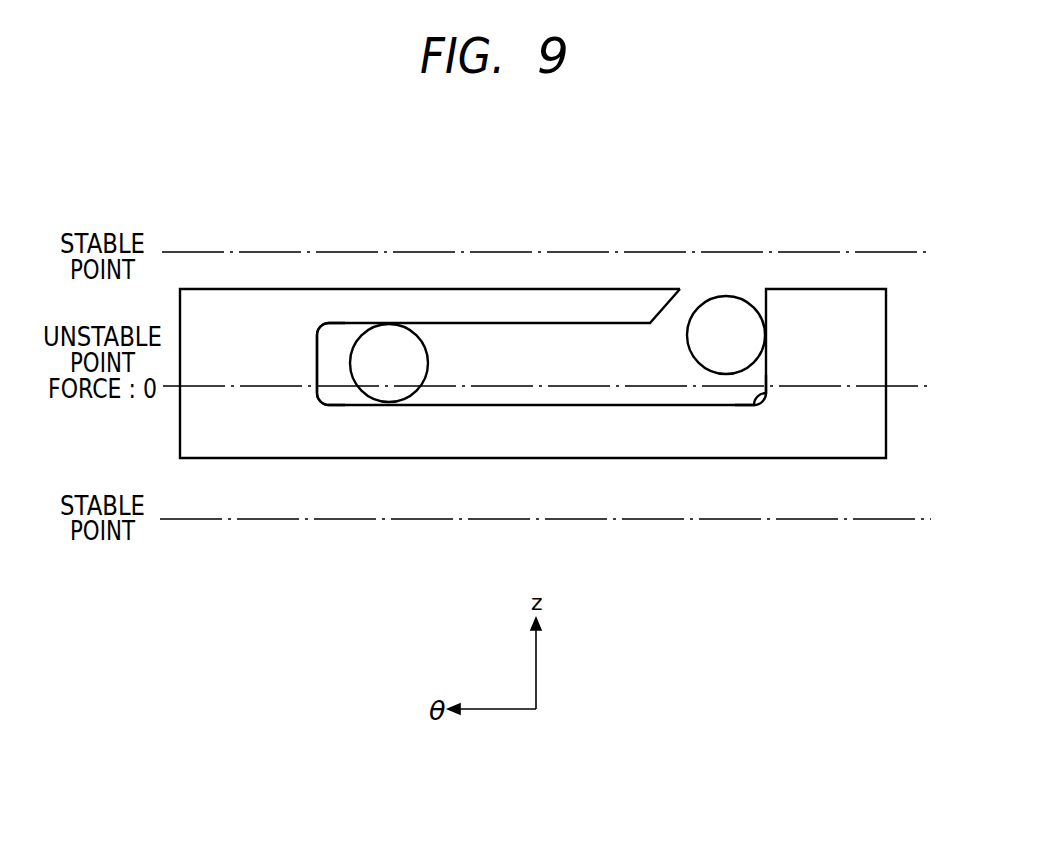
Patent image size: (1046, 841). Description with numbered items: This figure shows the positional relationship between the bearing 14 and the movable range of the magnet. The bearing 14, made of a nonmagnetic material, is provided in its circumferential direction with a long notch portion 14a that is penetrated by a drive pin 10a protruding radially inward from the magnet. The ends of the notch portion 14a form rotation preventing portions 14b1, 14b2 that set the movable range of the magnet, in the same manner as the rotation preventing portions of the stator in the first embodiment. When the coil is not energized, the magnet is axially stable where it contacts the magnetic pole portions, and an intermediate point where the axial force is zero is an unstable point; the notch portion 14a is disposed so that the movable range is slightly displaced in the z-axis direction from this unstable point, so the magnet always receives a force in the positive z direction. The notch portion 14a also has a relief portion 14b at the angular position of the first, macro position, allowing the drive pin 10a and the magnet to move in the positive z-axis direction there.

The bearing 14 is at (812, 430).
The notch portion 14a is at (545, 350).
The drive pin 10a is at (382, 363).
The relief portion 14b is at (686, 303).
The rotation preventing portion 14b1 is at (766, 368).
The rotation preventing portion 14b2 is at (319, 370).